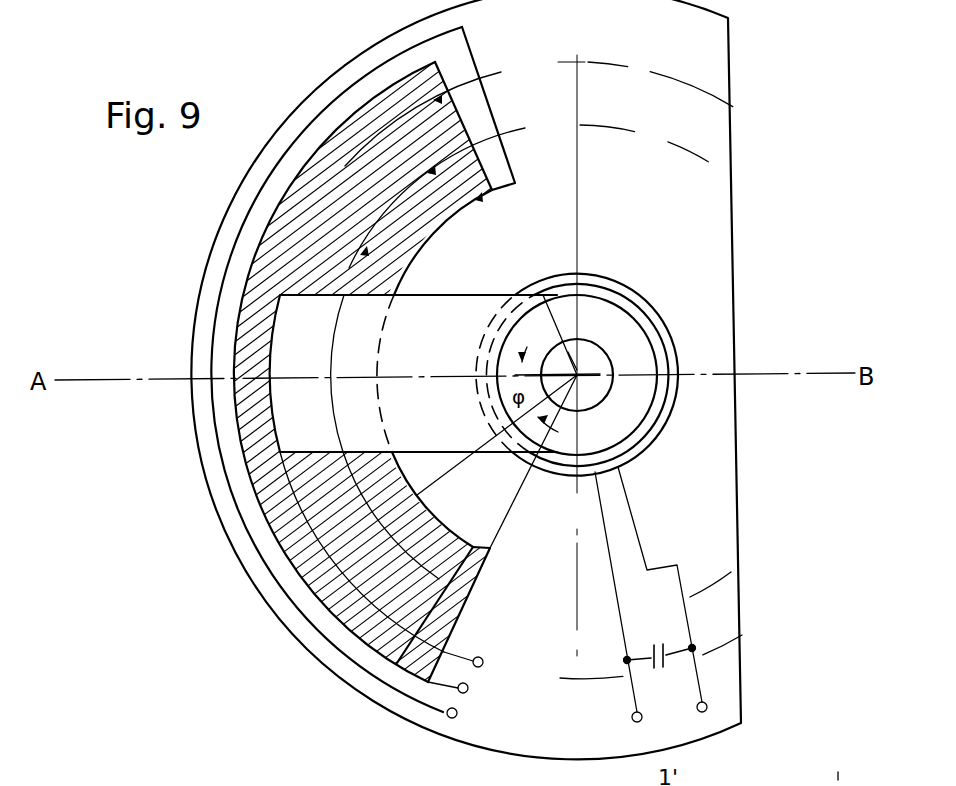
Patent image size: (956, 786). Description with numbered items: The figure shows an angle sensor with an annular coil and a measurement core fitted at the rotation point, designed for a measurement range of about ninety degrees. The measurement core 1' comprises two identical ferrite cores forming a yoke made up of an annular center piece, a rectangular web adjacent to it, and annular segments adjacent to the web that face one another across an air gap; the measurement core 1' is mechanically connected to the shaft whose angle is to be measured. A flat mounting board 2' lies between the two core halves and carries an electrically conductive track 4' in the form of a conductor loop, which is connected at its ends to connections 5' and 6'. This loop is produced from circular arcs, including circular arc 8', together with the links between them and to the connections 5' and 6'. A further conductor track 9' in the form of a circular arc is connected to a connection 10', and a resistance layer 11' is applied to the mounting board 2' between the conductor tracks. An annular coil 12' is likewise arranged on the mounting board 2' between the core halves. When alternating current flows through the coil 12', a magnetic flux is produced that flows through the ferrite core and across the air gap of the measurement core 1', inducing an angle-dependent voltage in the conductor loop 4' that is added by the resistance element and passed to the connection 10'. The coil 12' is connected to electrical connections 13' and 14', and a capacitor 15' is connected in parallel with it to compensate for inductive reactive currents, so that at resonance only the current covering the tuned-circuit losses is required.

The measurement core 1' is at (423, 395).
The mounting board 2' is at (690, 370).
The electrically conductive track 4' is at (487, 528).
The connection 5' is at (484, 650).
The connection 6' is at (466, 721).
The circular arc 8' is at (466, 379).
The further conductor track 9' is at (312, 354).
The connection 10' is at (480, 682).
The resistance layer 11' is at (388, 393).
The annular coil 12' is at (591, 382).
The electrical connection 13' is at (647, 737).
The electrical connection 14' is at (712, 724).
The capacitor 15' is at (648, 589).